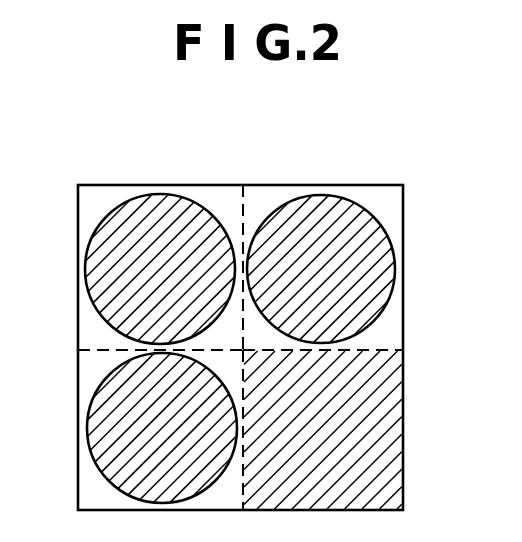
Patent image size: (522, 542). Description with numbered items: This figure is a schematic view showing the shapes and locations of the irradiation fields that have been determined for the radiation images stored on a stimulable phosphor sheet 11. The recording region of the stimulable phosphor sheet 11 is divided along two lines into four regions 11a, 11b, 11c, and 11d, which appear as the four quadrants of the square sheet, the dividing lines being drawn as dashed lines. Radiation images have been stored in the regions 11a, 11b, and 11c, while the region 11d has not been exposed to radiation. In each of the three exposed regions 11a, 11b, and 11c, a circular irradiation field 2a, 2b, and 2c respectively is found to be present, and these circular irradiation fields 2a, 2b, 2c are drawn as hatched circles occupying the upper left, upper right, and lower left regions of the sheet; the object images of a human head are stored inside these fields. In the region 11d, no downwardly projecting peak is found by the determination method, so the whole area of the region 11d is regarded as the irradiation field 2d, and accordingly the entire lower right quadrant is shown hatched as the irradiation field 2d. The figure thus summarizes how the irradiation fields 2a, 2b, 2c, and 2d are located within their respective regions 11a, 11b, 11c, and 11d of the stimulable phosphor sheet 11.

The stimulable phosphor sheet 11 is at (408, 258).
The region 11a is at (97, 200).
The region 11b is at (265, 200).
The region 11c is at (90, 373).
The region 11d is at (393, 372).
The irradiation field 2a is at (203, 198).
The irradiation field 2b is at (367, 207).
The irradiation field 2c is at (93, 412).
The irradiation field 2d is at (390, 432).